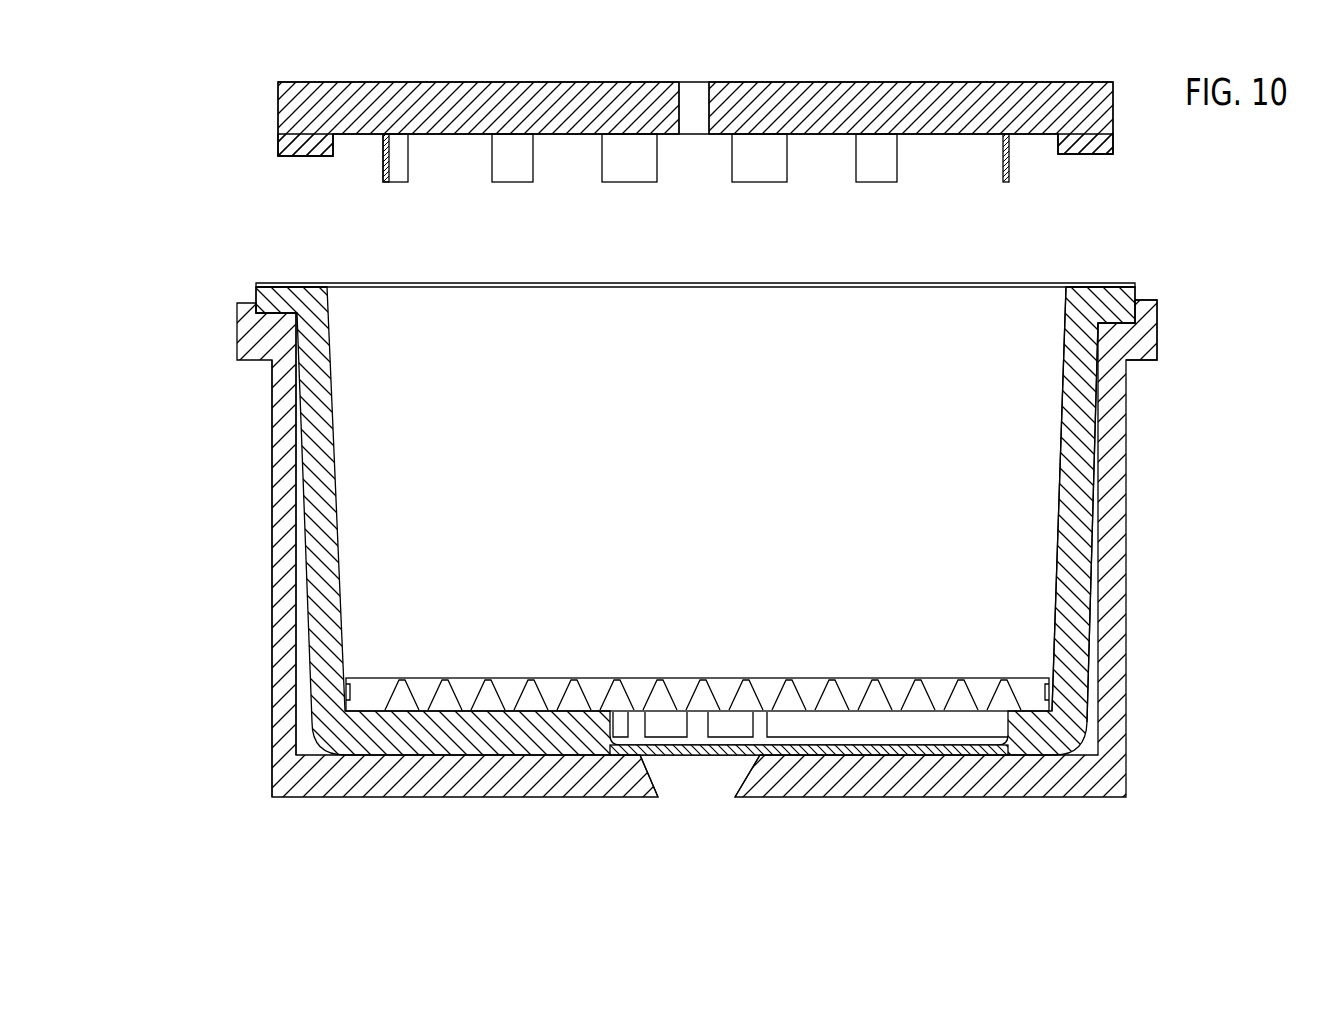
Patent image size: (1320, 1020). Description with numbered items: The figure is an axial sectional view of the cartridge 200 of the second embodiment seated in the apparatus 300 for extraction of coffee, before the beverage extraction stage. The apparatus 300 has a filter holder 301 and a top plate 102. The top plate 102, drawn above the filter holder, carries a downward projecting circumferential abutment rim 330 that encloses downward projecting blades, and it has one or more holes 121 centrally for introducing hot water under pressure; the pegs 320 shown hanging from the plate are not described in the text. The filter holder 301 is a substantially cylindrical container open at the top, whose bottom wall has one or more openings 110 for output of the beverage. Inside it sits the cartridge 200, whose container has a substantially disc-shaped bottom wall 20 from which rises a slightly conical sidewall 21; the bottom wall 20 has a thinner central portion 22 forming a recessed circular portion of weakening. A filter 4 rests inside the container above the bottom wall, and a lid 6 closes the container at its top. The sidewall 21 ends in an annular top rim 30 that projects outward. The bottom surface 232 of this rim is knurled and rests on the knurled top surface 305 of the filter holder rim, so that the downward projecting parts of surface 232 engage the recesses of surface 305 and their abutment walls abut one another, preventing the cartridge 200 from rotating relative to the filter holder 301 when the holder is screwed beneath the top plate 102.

The top plate 102 is at (553, 106).
The holes 121 is at (697, 103).
The circumferential abutment rim 330 is at (299, 148).
The lid pegs 320 is at (764, 171).
The lid 6 is at (1013, 287).
The cartridge 200 is at (246, 279).
The apparatus for extraction of coffee 300 is at (196, 358).
The filter holder 301 is at (257, 560).
The top surface of the top rim of the filter holder 305 is at (1134, 320).
The annular top rim 30 is at (1102, 297).
The bottom surface of the top rim 232 is at (1128, 324).
The sidewall 21 is at (1079, 549).
The bottom wall 20 is at (876, 752).
The thinner central portion 22 is at (724, 750).
The filter 4 is at (807, 665).
The openings 110 is at (666, 783).